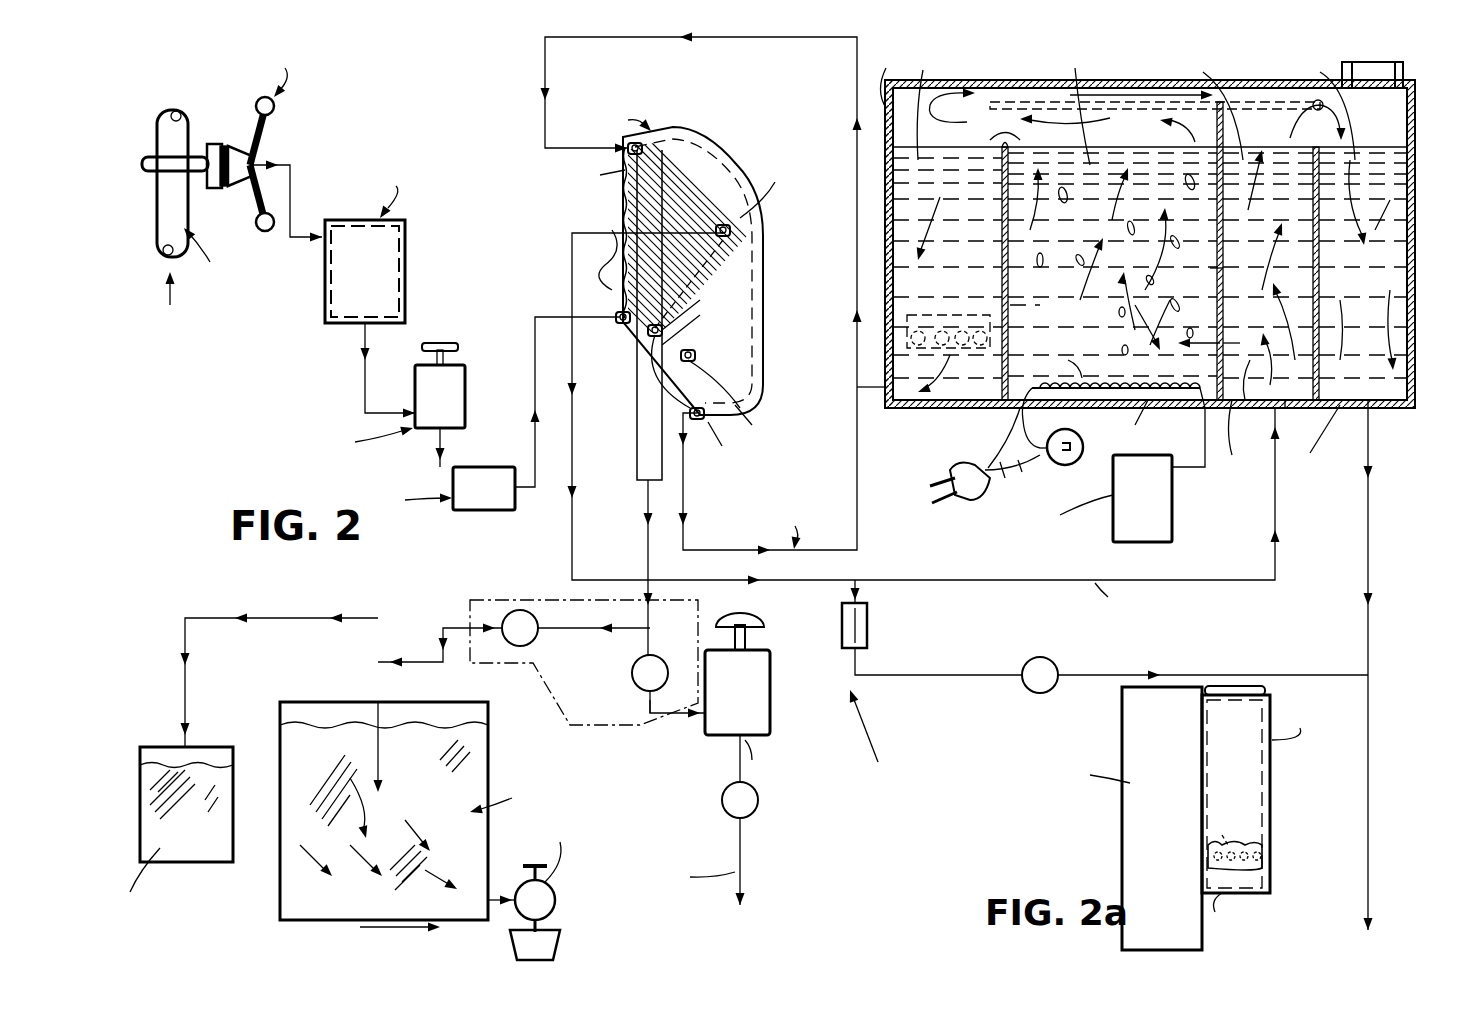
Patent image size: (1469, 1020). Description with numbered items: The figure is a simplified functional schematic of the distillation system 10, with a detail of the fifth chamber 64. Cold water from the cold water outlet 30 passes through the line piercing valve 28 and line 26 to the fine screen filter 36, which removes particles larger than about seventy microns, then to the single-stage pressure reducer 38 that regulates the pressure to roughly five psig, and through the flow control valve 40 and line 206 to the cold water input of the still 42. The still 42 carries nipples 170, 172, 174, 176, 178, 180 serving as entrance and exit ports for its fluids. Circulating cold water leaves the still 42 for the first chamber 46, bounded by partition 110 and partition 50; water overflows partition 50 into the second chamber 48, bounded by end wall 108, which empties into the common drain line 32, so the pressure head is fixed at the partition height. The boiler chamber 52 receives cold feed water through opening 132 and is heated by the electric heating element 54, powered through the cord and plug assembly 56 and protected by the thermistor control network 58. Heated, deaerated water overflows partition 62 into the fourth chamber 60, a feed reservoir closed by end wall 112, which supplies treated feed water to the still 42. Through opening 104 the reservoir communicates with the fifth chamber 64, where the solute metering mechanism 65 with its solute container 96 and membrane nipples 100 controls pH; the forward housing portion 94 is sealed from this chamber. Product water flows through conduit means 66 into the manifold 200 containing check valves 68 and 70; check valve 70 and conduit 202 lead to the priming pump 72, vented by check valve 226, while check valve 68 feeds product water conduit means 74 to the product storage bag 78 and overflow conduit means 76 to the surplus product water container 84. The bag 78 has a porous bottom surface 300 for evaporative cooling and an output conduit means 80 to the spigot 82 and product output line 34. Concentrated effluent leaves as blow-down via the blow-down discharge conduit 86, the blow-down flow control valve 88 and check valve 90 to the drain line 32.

In FIG. 2, the distillation system 10 is at (872, 736).
In FIG. 2, the cold water supply line 26 is at (292, 200).
In FIG. 2, the line piercing valve 28 is at (214, 150).
In FIG. 2, the cold water outlet pipe 30 is at (186, 122).
In FIG. 2, the drain line 32 is at (1370, 795).
In FIG. 2, the product output line 34 is at (560, 930).
In FIG. 2, the fine screen filter 36 is at (406, 260).
In FIG. 2, the single-stage pressure reducer 38 is at (466, 388).
In FIG. 2, the flow control valve 40 is at (488, 468).
In FIG. 2, the still 42 is at (722, 157).
In FIG. 2, the first chamber 46 is at (1296, 402).
In FIG. 2, the second chamber 48 is at (1402, 405).
In FIG. 2, the partition 50 is at (1320, 258).
In FIG. 2, the boiler chamber 52 is at (1214, 268).
In FIG. 2, the electric heating element 54 is at (1105, 385).
In FIG. 2, the cord and plug assembly 56 is at (1035, 478).
In FIG. 2, the thermistor control network 58 is at (1176, 510).
In FIG. 2, the fourth chamber 60 is at (1008, 278).
In FIG. 2, the partition 62 is at (1010, 308).
In FIG. 2A, the fifth chamber 64 is at (1270, 808).
In FIG. 2A, the solute metering mechanism 65 is at (1234, 686).
In FIG. 2, the conduit means 66 is at (575, 618).
In FIG. 2, the check valve 68 is at (512, 612).
In FIG. 2, the check valve 70 is at (664, 662).
In FIG. 2, the priming pump 72 is at (772, 680).
In FIG. 2, the product water conduit means 74 is at (382, 694).
In FIG. 2, the conduit means 76 is at (245, 618).
In FIG. 2, the product storage bag 78 is at (490, 770).
In FIG. 2, the output conduit means 80 is at (518, 893).
In FIG. 2, the spigot 82 is at (556, 886).
In FIG. 2, the surplus product water container 84 is at (234, 805).
In FIG. 2, the blow-down discharge conduit 86 is at (685, 468).
In FIG. 2, the blow-down flow control valve 88 is at (868, 620).
In FIG. 2, the check valve 90 is at (1048, 658).
In FIG. 2A, the forward housing portion 94 is at (1120, 712).
In FIG. 2A, the solute container 96 is at (1240, 868).
In FIG. 2A, the nipples 100 is at (1230, 829).
In FIG. 2, the opening 104 is at (942, 320).
In FIG. 2, the end wall 108 is at (1416, 182).
In FIG. 2, the partition 110 is at (1224, 318).
In FIG. 2, the end wall 112 is at (889, 244).
In FIG. 2, the opening 132 is at (1218, 346).
In FIG. 2, the nipple 170 is at (698, 422).
In FIG. 2, the nipple 172 is at (695, 350).
In FIG. 2, the nipple 174 is at (660, 325).
In FIG. 2, the nipple 176 is at (620, 313).
In FIG. 2, the nipple 178 is at (735, 234).
In FIG. 2, the nipple 180 is at (628, 146).
In FIG. 2, the manifold 200 is at (545, 692).
In FIG. 2, the conduit 202 is at (650, 700).
In FIG. 2, the feed line 206 is at (534, 384).
In FIG. 2, the check valve 226 is at (758, 812).
In FIG. 2, the bottom surface 300 is at (298, 921).